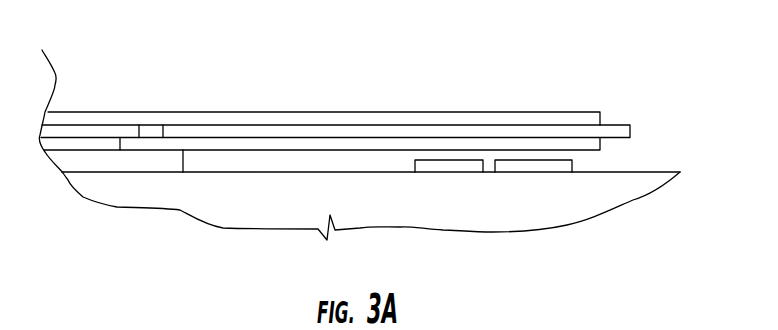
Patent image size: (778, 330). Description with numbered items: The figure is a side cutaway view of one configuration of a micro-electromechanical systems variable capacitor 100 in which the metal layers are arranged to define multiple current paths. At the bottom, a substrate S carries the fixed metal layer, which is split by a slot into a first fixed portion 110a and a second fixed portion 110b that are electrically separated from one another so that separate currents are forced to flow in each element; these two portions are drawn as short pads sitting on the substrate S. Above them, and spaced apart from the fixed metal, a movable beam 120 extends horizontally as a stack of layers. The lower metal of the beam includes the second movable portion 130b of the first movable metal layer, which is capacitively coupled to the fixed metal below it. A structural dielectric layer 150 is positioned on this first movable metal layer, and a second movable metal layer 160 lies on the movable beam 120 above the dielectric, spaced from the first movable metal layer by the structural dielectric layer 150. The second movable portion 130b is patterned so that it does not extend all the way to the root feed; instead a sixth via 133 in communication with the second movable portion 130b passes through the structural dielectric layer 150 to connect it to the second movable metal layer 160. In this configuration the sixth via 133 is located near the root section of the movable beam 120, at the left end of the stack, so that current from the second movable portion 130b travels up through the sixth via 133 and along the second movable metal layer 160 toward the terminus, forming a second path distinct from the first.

The variable capacitor 100 is at (222, 40).
The movable beam 120 is at (457, 85).
The second movable metal layer 160 is at (555, 112).
The structural dielectric layer 150 is at (632, 130).
The second movable portion 130b is at (602, 145).
The sixth via 133 is at (151, 131).
The first fixed portion 110a is at (532, 172).
The second fixed portion 110b is at (447, 172).
The substrate S is at (602, 195).